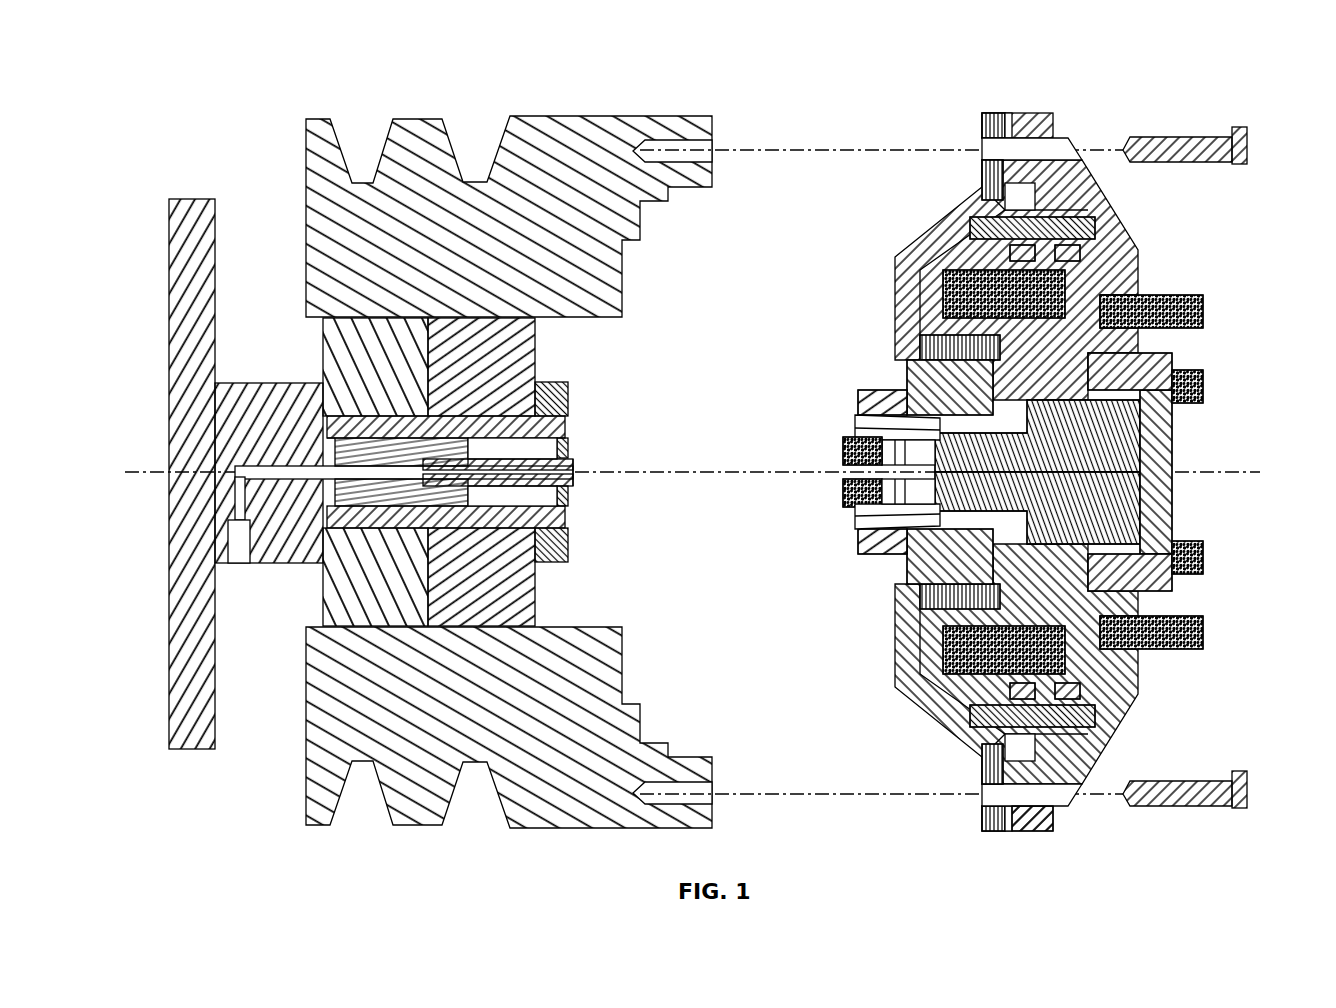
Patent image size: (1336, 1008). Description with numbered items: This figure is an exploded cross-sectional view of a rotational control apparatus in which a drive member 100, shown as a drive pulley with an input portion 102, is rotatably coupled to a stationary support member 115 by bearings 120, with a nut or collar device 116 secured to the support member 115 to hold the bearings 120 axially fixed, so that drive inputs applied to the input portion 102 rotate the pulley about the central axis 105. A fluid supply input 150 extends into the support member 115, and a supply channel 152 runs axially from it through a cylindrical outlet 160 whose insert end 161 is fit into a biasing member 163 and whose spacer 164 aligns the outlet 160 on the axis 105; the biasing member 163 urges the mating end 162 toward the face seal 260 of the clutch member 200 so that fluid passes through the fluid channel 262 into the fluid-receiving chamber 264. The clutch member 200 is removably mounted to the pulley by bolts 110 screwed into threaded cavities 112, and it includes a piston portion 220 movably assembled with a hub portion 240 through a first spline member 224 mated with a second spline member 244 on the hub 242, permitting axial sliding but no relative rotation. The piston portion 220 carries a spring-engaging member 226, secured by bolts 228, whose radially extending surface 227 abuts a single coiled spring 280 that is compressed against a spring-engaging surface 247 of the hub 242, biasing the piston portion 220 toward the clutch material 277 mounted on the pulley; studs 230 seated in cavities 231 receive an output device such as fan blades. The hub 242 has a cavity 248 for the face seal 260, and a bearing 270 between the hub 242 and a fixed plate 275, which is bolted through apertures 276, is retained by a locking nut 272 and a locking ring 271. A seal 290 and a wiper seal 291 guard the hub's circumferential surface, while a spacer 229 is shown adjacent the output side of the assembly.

The drive member 100 is at (606, 453).
The input portion 102 is at (390, 130).
The central axis 105 is at (711, 468).
The bolts 110 is at (1248, 147).
The threaded cavities 112 is at (712, 148).
The support member 115 is at (166, 252).
The nut or collar device 116 is at (570, 395).
The bearings 120 is at (325, 576).
The fluid supply input 150 is at (237, 563).
The supply channel 152 is at (576, 467).
The cylindrical outlet 160 is at (580, 483).
The insert end 161 is at (425, 466).
The mating end 162 is at (571, 448).
The biasing member 163 is at (335, 449).
The spacer 164 is at (570, 426).
The clutch member 200 is at (1048, 470).
The piston portion 220 is at (1150, 549).
The first spline member 224 is at (1150, 371).
The spring-engaging member 226 is at (906, 690).
The radially extending surface 227 is at (943, 301).
The bolts 228 is at (960, 213).
The spacer 229 is at (1196, 381).
The studs 230 is at (1204, 313).
The cavities 231 is at (1141, 298).
The hub portion 240 is at (1005, 409).
The hub 242 is at (880, 520).
The second spline member 244 is at (1173, 431).
The spring-engaging surface 247 is at (1090, 676).
The cavity 248 is at (858, 403).
The face seal 260 is at (843, 493).
The fluid channel 262 is at (843, 453).
The fluid-receiving chamber 264 is at (1100, 271).
The bearing 270 is at (906, 561).
The locking ring 271 is at (906, 591).
The locking nut 272 is at (880, 544).
The fixed plate 275 is at (984, 198).
The apertures 276 is at (985, 136).
The clutch material 277 is at (1010, 115).
The spring 280 is at (1095, 250).
The seal 290 is at (1085, 693).
The wiper seal 291 is at (1106, 733).